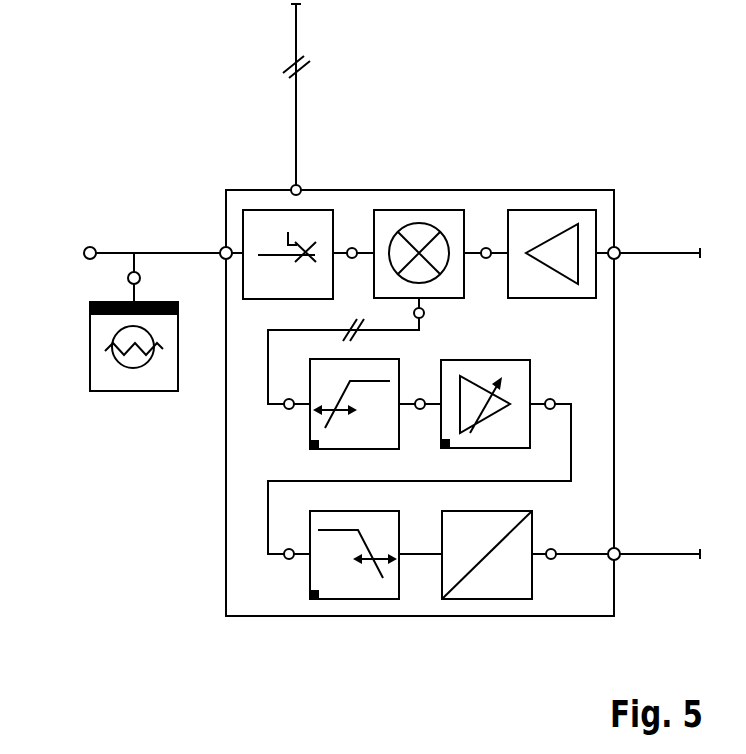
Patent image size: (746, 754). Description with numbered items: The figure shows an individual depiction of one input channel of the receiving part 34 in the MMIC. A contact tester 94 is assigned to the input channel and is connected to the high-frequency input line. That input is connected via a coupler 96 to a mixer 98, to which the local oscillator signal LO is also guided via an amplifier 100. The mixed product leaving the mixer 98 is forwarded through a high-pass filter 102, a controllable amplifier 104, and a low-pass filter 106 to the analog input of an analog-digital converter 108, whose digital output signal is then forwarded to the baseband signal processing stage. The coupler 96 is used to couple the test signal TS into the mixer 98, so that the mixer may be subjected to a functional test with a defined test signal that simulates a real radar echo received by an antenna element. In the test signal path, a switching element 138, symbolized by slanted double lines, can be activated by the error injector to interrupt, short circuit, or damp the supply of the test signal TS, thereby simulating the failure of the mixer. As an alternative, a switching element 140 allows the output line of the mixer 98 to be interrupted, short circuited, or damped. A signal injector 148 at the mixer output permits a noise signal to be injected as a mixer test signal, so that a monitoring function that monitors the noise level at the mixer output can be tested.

The receiving part 34 is at (499, 148).
The contact tester 94 is at (88, 350).
The coupler 96 is at (266, 210).
The mixer 98 is at (420, 210).
The amplifier 100 is at (550, 210).
The high-pass filter 102 is at (310, 428).
The controllable amplifier 104 is at (530, 380).
The low-pass filter 106 is at (358, 599).
The analog-digital converter 108 is at (487, 599).
The switching element 138 is at (305, 64).
The switching element 140 is at (345, 333).
The signal injector 148 is at (432, 323).